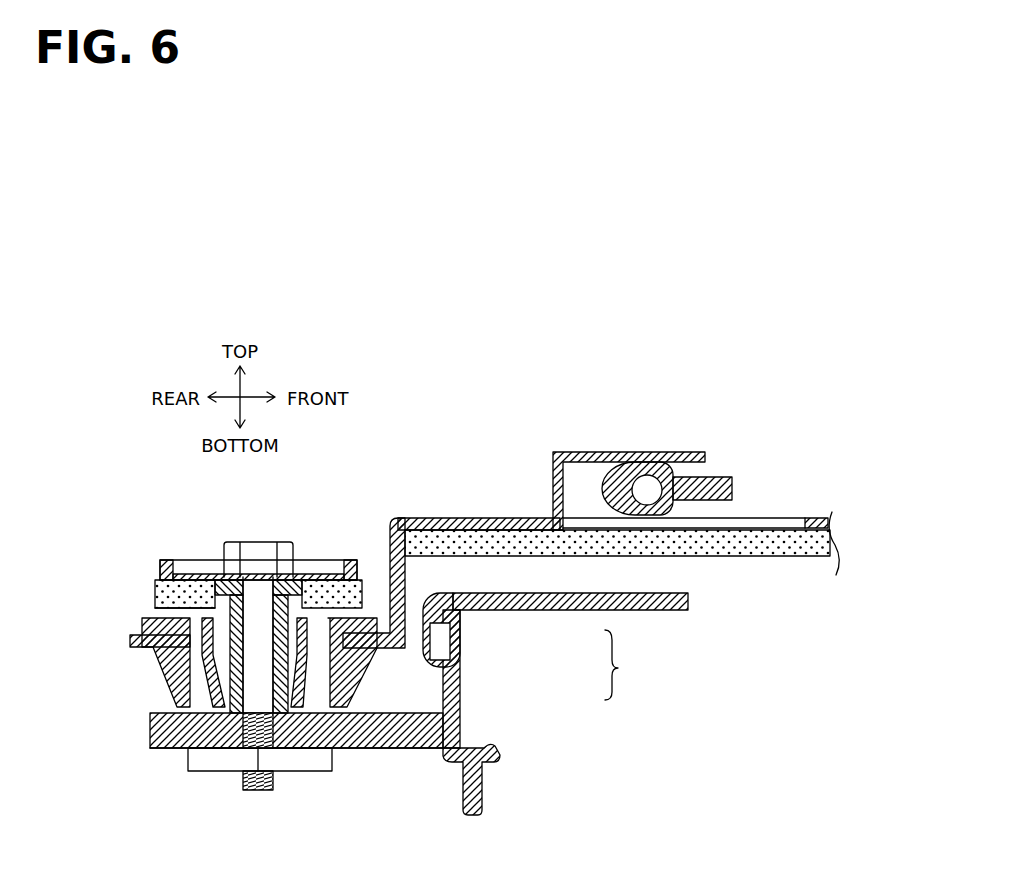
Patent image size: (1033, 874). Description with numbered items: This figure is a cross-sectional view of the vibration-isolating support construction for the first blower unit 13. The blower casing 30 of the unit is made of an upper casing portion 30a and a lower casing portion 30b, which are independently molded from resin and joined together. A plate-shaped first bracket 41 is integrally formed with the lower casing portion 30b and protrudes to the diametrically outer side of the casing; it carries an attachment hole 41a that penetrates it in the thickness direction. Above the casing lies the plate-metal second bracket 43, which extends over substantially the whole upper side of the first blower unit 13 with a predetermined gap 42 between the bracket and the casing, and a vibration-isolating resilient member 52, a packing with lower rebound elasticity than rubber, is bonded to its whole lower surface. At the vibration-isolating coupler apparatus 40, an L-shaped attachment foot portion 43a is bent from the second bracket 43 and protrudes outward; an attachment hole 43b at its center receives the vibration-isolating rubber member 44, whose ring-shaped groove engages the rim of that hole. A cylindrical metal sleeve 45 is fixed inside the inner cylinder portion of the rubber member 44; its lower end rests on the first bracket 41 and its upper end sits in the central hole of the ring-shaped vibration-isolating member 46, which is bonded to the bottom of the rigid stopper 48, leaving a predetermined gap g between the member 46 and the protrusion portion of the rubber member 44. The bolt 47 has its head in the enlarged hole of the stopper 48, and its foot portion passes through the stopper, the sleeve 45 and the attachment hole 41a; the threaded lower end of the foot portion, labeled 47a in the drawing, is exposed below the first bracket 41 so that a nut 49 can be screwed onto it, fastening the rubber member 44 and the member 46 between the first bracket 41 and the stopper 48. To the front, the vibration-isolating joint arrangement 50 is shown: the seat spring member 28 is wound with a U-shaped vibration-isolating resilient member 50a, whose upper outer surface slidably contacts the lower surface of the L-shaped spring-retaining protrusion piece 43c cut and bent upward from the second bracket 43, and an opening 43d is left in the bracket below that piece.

The first blower unit 13 is at (579, 718).
The seat spring member 28 is at (650, 492).
The blower casing 30 is at (629, 665).
The upper casing portion 30a is at (520, 609).
The lower casing portion 30b is at (456, 688).
The vibration-isolating coupler apparatus 40 is at (143, 712).
The first bracket 41 is at (365, 748).
The attachment hole 41a is at (205, 740).
The predetermined gap 42 is at (510, 582).
The second bracket 43 is at (532, 511).
The attachment foot portion 43a is at (130, 639).
The attachment hole 43b is at (175, 657).
The spring-retaining protrusion piece 43c is at (603, 452).
The opening 43d is at (772, 518).
The vibration-isolating rubber member 44 is at (182, 687).
The metal sleeve 45 is at (228, 598).
The vibration-isolating member 46 is at (165, 587).
The bolt 47 is at (257, 550).
The threaded end of bolt 47a is at (252, 792).
The stopper 48 is at (311, 576).
The nut 49 is at (200, 772).
The vibration-isolating joint arrangement 50 is at (661, 446).
The vibration-isolating resilient member 50a is at (613, 487).
The vibration-isolating resilient member 52 is at (392, 540).
The predetermined gap g is at (165, 612).